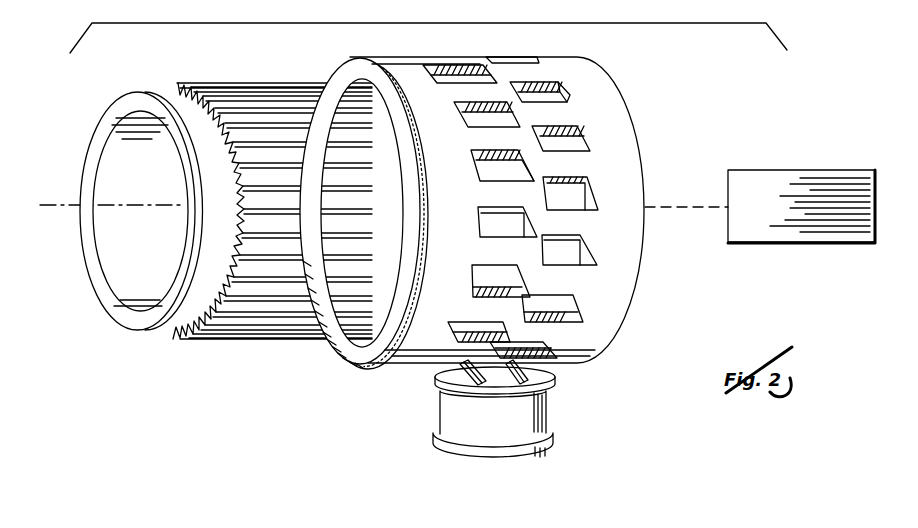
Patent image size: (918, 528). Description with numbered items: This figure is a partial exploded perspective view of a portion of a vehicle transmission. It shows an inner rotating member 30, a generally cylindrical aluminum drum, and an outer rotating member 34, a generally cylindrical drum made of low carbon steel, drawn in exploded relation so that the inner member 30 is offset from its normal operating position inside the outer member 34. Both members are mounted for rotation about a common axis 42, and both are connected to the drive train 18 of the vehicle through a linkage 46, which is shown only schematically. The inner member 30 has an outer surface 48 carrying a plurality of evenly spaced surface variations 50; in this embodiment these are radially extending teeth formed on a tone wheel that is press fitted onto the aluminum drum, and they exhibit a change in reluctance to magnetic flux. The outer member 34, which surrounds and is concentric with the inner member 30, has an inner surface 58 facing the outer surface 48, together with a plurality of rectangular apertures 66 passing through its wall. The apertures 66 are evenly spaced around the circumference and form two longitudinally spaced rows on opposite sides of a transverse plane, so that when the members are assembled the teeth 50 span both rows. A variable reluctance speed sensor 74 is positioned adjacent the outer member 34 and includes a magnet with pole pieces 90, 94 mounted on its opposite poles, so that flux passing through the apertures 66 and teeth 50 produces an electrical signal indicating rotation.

The drive train 18 is at (840, 156).
The inner rotating member 30 is at (138, 91).
The outer rotating member 34 is at (617, 93).
The axis 42 is at (138, 209).
The linkage 46 is at (712, 206).
The outer surface 48 is at (170, 328).
The surface variations 50 is at (238, 218).
The inner surface 58 is at (347, 60).
The apertures 66 is at (472, 157).
The sensor 74 is at (489, 432).
The pole piece 90 is at (436, 389).
The pole piece 94 is at (553, 372).